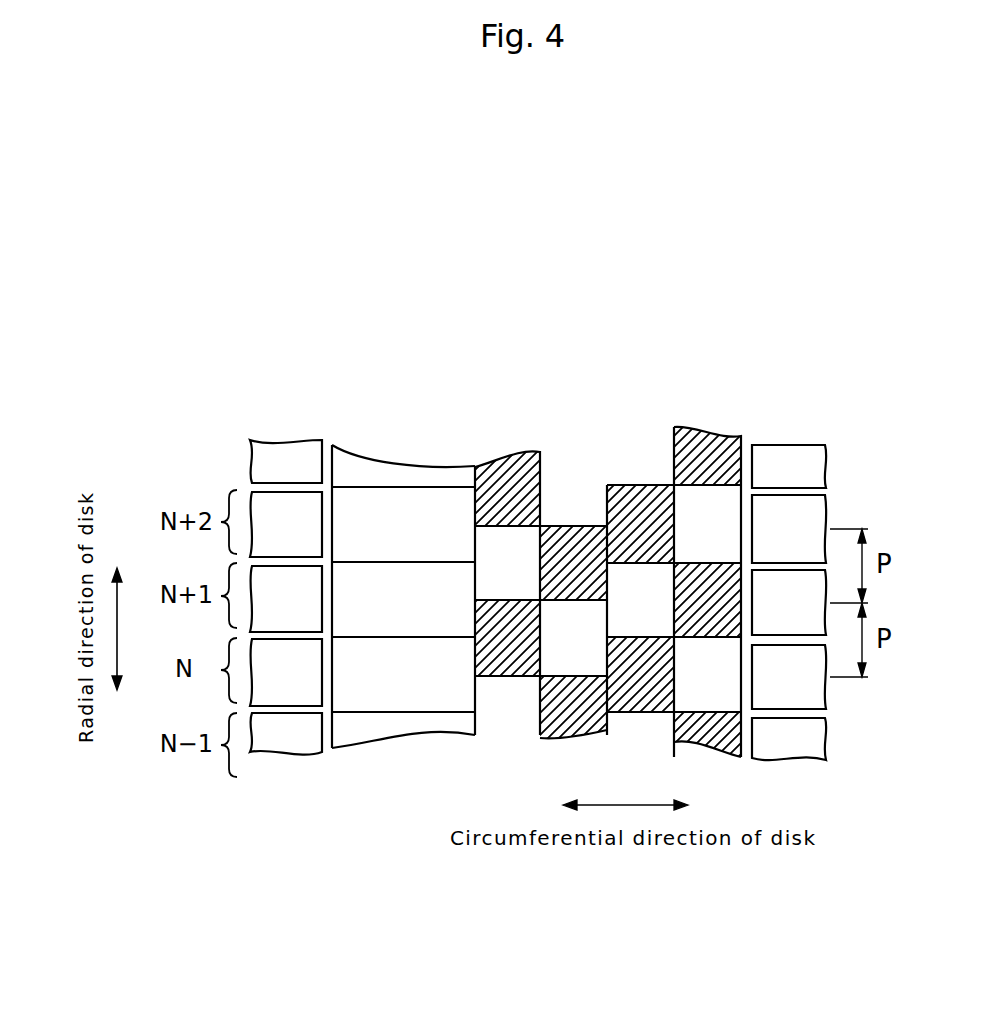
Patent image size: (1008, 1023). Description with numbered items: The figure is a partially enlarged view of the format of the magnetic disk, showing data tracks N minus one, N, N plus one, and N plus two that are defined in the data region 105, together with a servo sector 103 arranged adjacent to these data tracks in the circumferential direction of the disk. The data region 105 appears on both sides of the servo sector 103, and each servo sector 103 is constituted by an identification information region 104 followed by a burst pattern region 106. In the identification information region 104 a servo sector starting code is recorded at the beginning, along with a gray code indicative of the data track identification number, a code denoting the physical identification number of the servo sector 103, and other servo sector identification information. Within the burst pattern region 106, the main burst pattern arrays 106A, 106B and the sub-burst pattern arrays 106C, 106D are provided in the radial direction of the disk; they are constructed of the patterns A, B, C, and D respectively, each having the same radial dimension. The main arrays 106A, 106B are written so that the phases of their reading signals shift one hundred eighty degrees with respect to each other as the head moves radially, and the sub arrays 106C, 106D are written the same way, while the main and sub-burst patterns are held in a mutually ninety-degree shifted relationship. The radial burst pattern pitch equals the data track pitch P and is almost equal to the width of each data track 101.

The data track 101 is at (130, 718).
The servo sector 103 is at (745, 288).
The identification information region 104 is at (475, 353).
The data region 105 is at (320, 288).
The burst pattern region 106 is at (745, 353).
The main burst pattern array 106A is at (540, 411).
The main burst pattern array 106B is at (607, 411).
The sub-burst pattern array 106C is at (607, 411).
The sub-burst pattern array 106D is at (673, 411).